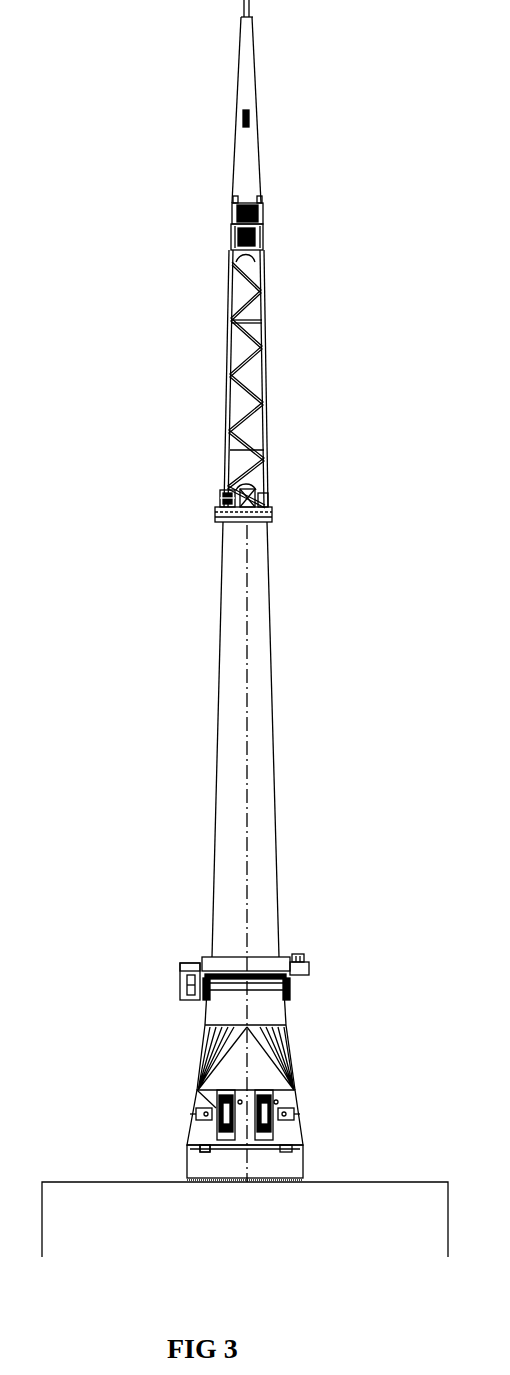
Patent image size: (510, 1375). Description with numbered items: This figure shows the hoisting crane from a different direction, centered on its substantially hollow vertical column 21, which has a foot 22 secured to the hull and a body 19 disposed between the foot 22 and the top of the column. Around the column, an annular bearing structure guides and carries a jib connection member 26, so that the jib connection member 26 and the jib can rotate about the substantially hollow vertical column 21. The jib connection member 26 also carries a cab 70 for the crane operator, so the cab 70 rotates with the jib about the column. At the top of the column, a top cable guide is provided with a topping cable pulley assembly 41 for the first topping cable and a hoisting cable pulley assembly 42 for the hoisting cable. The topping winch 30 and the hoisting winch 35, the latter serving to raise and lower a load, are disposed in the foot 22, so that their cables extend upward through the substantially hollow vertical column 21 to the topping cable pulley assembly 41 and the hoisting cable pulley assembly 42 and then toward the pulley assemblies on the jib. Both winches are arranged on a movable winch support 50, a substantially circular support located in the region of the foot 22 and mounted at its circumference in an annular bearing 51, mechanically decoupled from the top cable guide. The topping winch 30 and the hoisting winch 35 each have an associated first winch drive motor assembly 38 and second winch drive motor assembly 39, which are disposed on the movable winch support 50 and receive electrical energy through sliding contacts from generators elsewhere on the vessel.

The body 19 is at (272, 720).
The substantially hollow vertical column 21 is at (308, 777).
The foot 22 is at (297, 1105).
The jib connection member 26 is at (290, 947).
The topping winch 30 is at (303, 1132).
The hoisting winch 35 is at (197, 1128).
The first winch drive motor assembly 38 is at (290, 1088).
The second winch drive motor assembly 39 is at (197, 1102).
The topping cable pulley assembly 41 is at (220, 500).
The hoisting cable pulley assembly 42 is at (247, 491).
The movable winch support 50 is at (247, 1150).
The annular bearing 51 is at (203, 1148).
The cab 70 is at (180, 984).